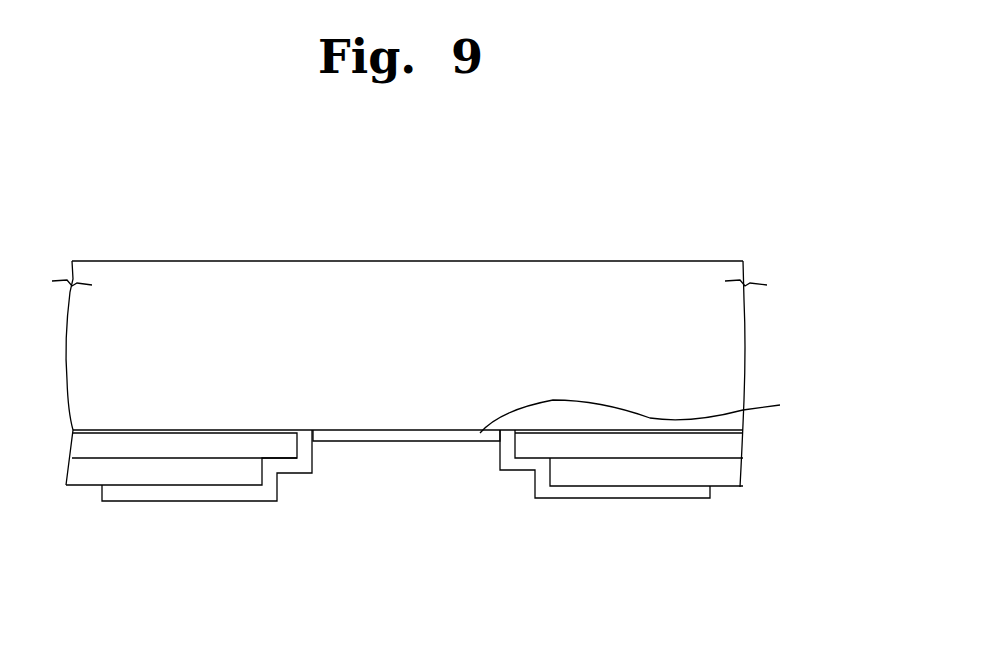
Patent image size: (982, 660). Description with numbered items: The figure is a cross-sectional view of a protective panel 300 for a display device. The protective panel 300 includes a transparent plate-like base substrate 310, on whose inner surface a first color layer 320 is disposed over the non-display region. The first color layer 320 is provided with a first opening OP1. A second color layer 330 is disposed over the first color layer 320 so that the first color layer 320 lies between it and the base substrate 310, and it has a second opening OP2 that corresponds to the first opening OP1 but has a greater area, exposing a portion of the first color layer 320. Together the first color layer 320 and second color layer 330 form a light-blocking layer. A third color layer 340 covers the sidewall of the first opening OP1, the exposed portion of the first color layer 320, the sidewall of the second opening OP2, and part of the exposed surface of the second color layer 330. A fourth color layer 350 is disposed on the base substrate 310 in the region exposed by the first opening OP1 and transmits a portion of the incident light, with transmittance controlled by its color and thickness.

The protective panel 300 is at (680, 231).
The base substrate 310 is at (727, 343).
The first color layer 320 is at (727, 443).
The second color layer 330 is at (730, 470).
The third color layer 340 is at (702, 493).
The fourth color layer 350 is at (650, 413).
The first opening OP1 is at (405, 452).
The second opening OP2 is at (289, 482).